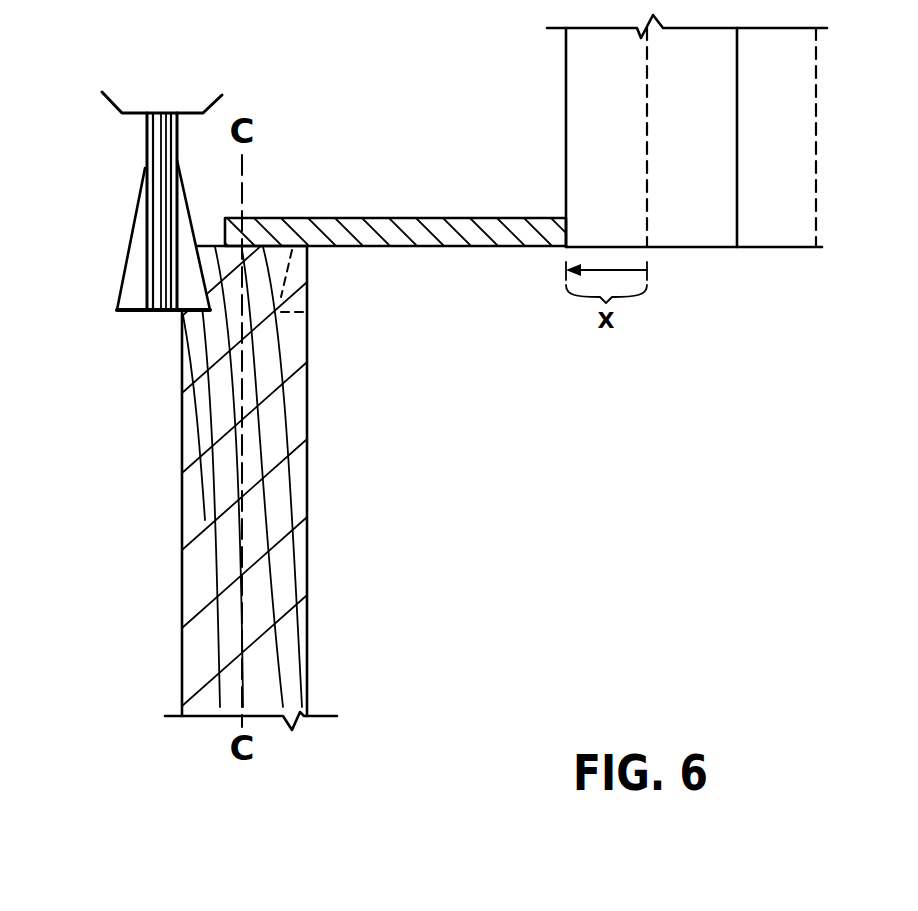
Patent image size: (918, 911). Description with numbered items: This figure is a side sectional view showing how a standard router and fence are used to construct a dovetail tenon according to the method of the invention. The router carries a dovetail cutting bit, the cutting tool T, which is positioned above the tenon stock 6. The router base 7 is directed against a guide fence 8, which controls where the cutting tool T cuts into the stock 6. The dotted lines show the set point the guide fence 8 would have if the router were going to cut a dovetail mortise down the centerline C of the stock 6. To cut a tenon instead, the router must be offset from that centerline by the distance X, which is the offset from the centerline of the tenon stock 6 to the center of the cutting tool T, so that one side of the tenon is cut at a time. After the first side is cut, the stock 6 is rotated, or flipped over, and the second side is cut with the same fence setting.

The tenon stock 6 is at (182, 515).
The router base 7 is at (416, 237).
The guide fence 8 is at (572, 108).
The cutting tool T is at (118, 294).